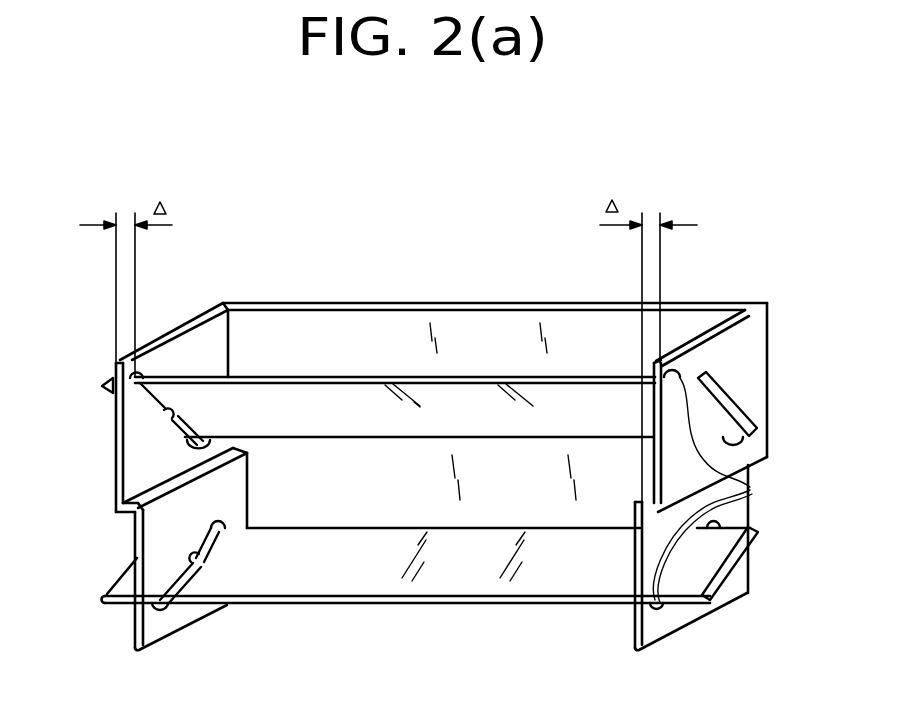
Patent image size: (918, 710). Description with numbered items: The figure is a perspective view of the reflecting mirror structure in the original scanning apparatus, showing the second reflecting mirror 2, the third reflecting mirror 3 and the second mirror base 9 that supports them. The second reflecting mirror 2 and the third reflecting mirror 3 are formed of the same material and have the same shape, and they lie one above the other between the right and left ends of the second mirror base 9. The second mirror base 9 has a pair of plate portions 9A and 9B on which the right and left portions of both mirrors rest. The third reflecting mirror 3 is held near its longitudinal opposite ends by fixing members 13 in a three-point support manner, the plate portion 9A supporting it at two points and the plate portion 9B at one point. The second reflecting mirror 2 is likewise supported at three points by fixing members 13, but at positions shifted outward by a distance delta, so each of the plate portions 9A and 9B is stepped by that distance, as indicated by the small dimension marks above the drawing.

The second reflecting mirror 2 is at (347, 400).
The third reflecting mirror 3 is at (330, 585).
The second mirror base 9 is at (725, 345).
The plate portion 9A is at (755, 378).
The plate portion 9B is at (190, 347).
The fixing member 13 is at (165, 420).